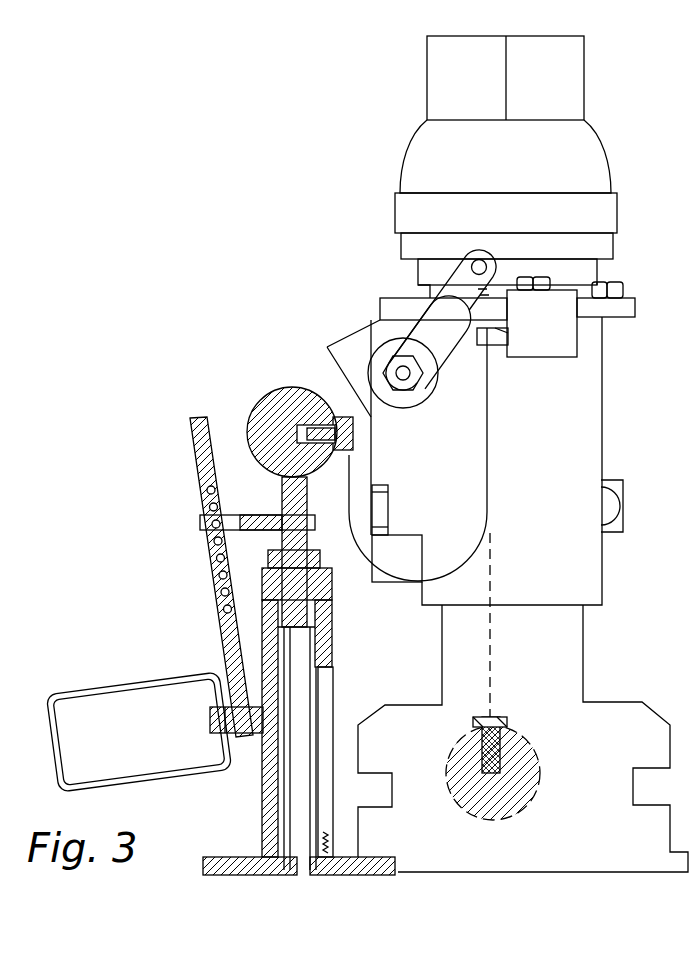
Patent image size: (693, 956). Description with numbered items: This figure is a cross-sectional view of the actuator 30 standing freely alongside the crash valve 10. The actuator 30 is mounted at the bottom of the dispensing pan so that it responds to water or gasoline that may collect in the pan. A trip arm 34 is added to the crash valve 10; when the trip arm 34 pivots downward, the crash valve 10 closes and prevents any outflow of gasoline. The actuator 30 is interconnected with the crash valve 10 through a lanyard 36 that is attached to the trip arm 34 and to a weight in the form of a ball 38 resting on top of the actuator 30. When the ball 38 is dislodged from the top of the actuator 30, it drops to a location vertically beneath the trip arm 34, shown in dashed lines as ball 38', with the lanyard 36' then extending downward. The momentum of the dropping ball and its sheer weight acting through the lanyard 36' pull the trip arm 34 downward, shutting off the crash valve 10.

The crash valve 10 is at (605, 410).
The actuator 30 is at (250, 801).
The trip arm 34 is at (497, 340).
The lanyard 36 is at (443, 454).
The lanyard 36' is at (524, 625).
The ball 38 is at (290, 396).
The ball 38' is at (523, 768).